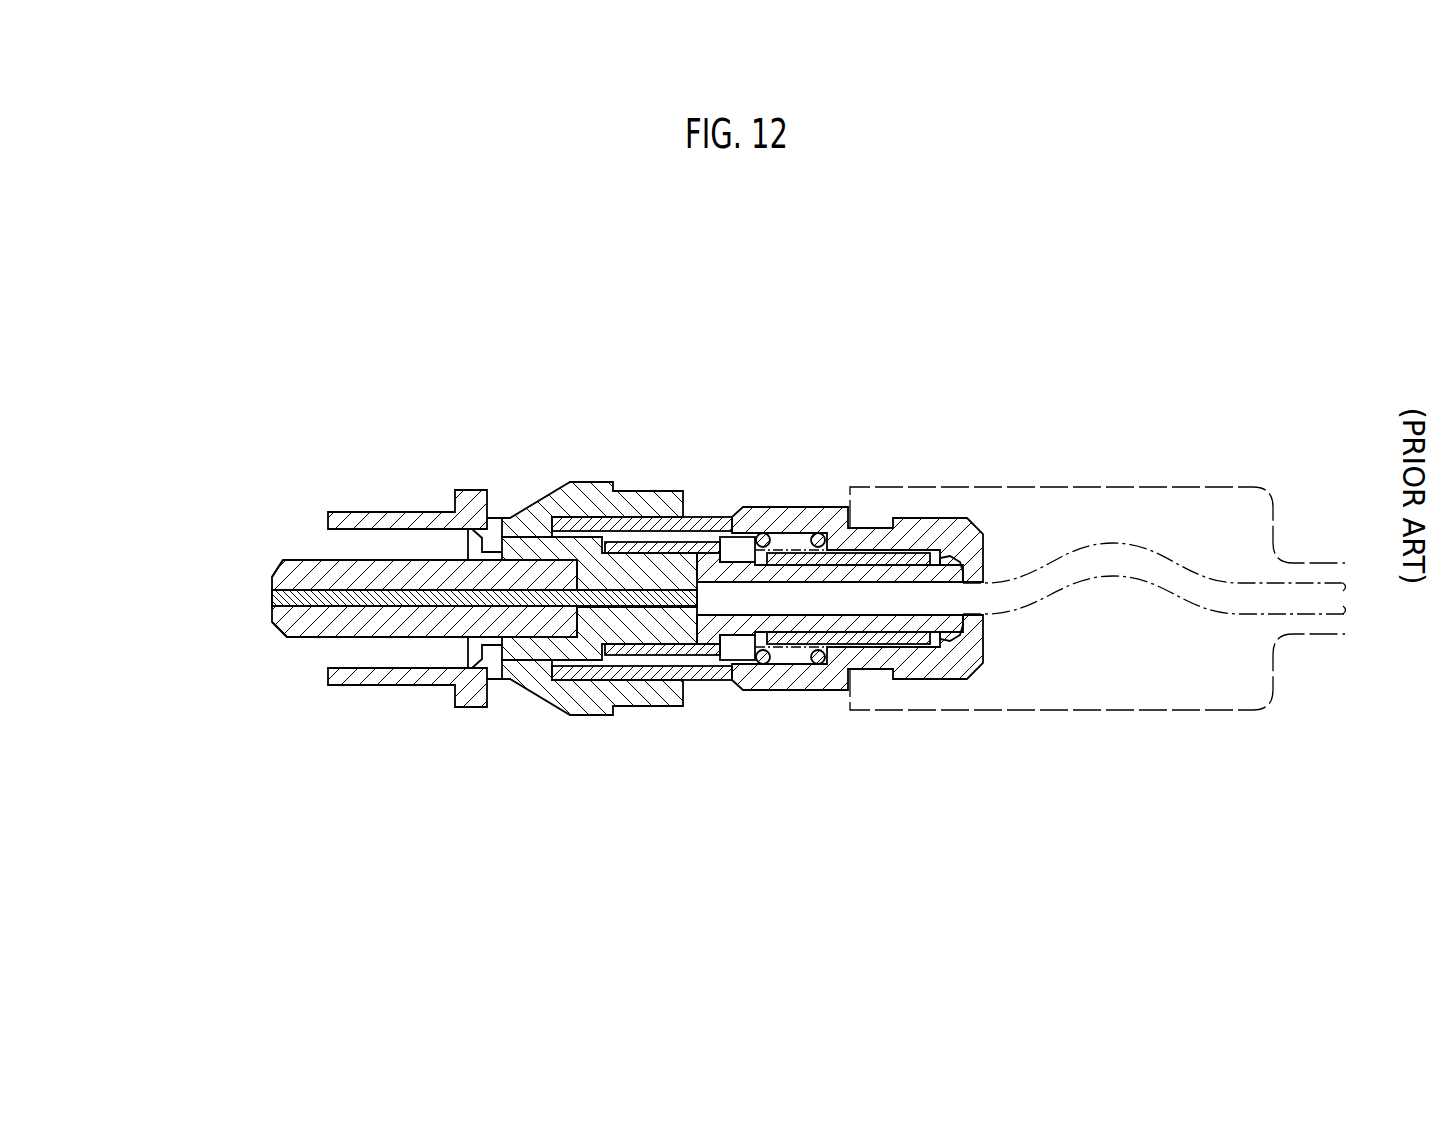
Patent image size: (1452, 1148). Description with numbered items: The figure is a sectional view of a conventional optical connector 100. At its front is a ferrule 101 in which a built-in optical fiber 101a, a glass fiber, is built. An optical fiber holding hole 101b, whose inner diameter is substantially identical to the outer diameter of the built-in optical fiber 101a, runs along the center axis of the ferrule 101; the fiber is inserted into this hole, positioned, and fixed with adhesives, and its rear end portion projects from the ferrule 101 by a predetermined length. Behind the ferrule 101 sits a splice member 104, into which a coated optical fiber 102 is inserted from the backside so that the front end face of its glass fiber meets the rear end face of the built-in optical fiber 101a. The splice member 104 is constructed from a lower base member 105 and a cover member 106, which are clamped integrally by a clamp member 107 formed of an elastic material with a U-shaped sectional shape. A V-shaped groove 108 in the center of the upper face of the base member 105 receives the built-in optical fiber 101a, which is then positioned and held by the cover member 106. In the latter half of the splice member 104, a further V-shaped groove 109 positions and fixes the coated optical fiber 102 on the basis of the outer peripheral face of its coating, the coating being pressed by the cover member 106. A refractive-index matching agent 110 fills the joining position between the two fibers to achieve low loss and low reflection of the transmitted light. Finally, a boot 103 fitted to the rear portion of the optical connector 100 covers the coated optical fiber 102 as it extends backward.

The optical connector 100 is at (886, 274).
The ferrule 101 is at (303, 644).
The built-in optical fiber 101a is at (417, 598).
The optical fiber holding hole 101b is at (275, 581).
The coated optical fiber 102 is at (1092, 548).
The boot 103 is at (1077, 712).
The splice member 104 is at (800, 498).
The base member 105 is at (618, 632).
The cover member 106 is at (701, 541).
The clamp member 107 is at (668, 516).
The V-shaped groove 108 is at (606, 516).
The V-shaped groove 109 is at (858, 612).
The refractive-index matching agent 110 is at (726, 530).